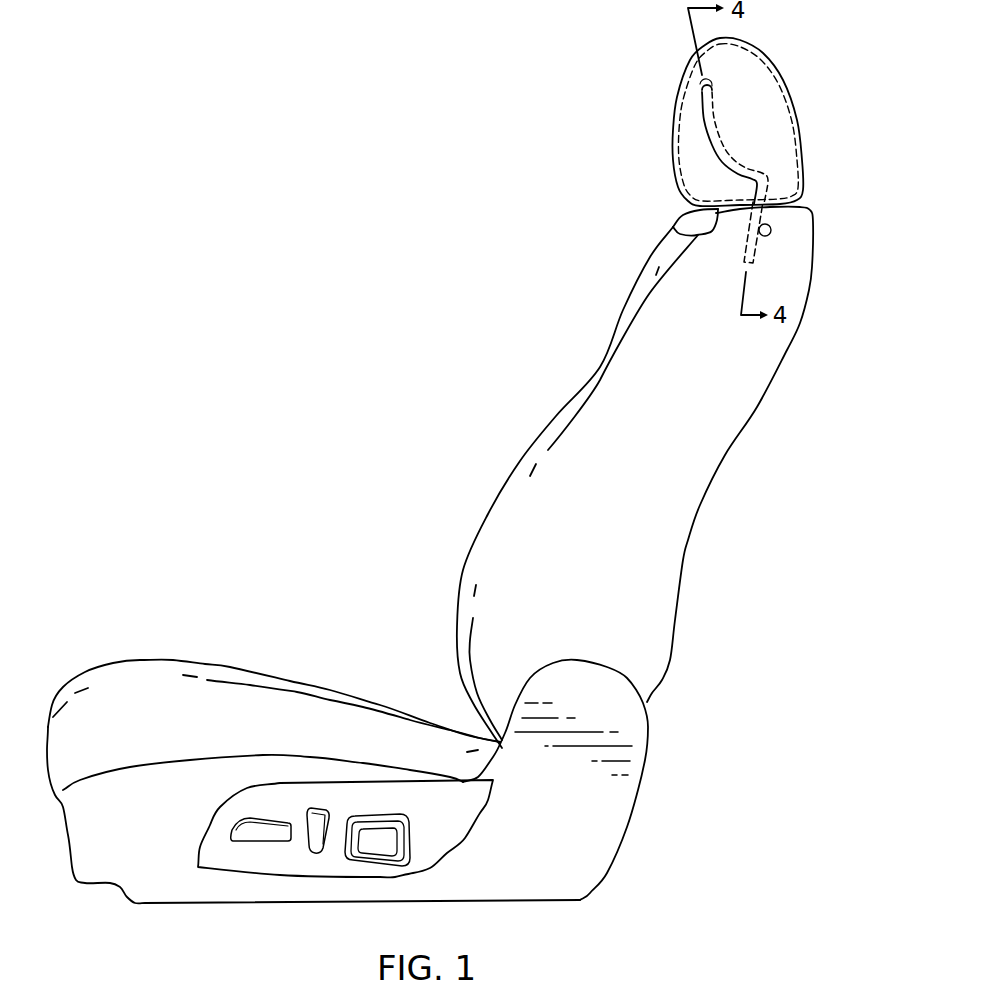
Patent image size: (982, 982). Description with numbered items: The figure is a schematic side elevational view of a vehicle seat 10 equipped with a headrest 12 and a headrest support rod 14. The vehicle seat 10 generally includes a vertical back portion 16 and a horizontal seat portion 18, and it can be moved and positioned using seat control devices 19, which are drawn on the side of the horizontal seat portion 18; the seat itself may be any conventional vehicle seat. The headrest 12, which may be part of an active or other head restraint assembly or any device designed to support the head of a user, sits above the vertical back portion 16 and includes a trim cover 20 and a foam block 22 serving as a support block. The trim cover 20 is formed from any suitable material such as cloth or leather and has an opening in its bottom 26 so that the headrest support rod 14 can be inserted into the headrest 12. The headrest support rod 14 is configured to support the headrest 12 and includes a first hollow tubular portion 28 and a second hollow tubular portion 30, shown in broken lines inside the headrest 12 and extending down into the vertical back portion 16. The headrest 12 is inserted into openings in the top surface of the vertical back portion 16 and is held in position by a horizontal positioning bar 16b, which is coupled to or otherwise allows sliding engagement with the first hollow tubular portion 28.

The vehicle seat 10 is at (360, 426).
The headrest 12 is at (716, 111).
The headrest support rod 14 is at (717, 110).
The vertical back portion 16 is at (659, 477).
The horizontal positioning bar 16b is at (772, 227).
The horizontal seat portion 18 is at (263, 670).
The seat control devices 19 is at (290, 854).
The trim cover 20 is at (750, 43).
The foam block 22 is at (770, 132).
The bottom 26 is at (680, 223).
The first hollow tubular portion 28 is at (755, 256).
The second hollow tubular portion 30 is at (703, 100).